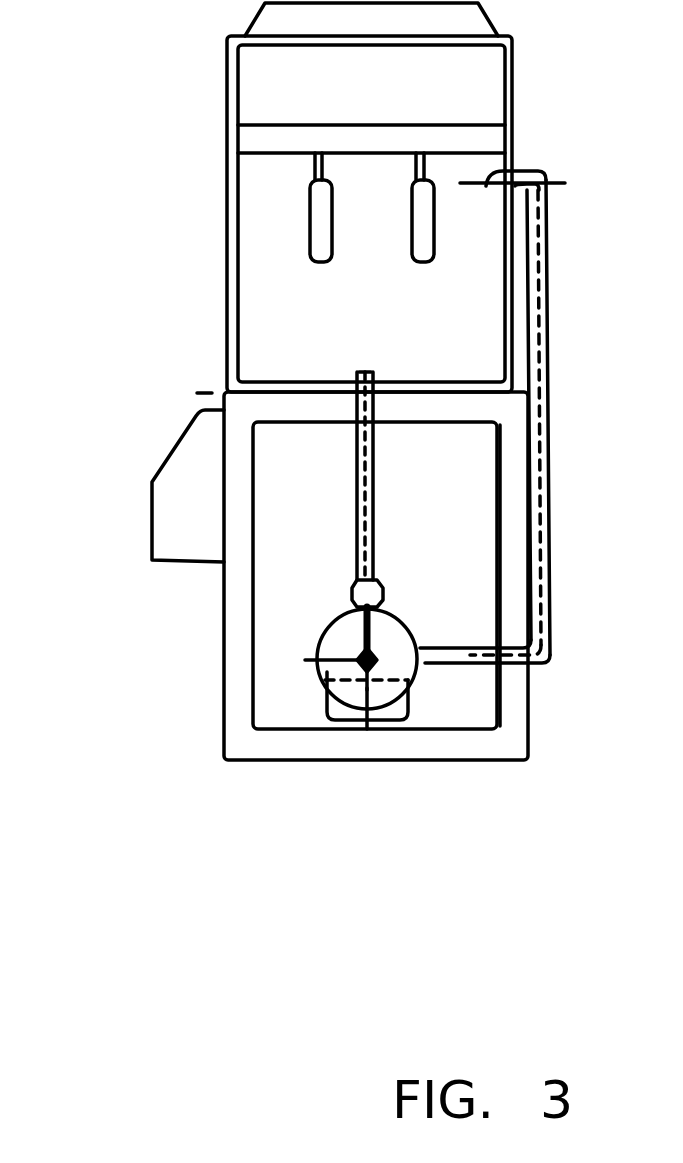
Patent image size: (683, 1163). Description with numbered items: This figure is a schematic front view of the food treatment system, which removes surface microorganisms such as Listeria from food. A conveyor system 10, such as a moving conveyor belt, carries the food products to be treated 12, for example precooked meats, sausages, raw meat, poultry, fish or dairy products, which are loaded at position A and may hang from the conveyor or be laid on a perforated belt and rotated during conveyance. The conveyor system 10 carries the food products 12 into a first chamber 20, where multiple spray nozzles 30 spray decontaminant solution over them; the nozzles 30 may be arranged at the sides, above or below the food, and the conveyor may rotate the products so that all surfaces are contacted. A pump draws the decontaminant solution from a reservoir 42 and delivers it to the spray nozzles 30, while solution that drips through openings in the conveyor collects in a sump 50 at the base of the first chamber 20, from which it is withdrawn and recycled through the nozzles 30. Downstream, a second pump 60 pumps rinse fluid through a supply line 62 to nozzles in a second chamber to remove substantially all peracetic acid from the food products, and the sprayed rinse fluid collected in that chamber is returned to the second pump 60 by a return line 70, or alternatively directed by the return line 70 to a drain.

The conveyor system 10 is at (320, 140).
The food products to be treated 12 is at (315, 228).
The first chamber 20 is at (275, 290).
The spray nozzles 30 is at (505, 160).
The reservoir 42 is at (403, 706).
The sump 50 is at (340, 549).
The second pump 60 is at (335, 668).
The supply line 62 is at (552, 542).
The return line 70 is at (373, 492).